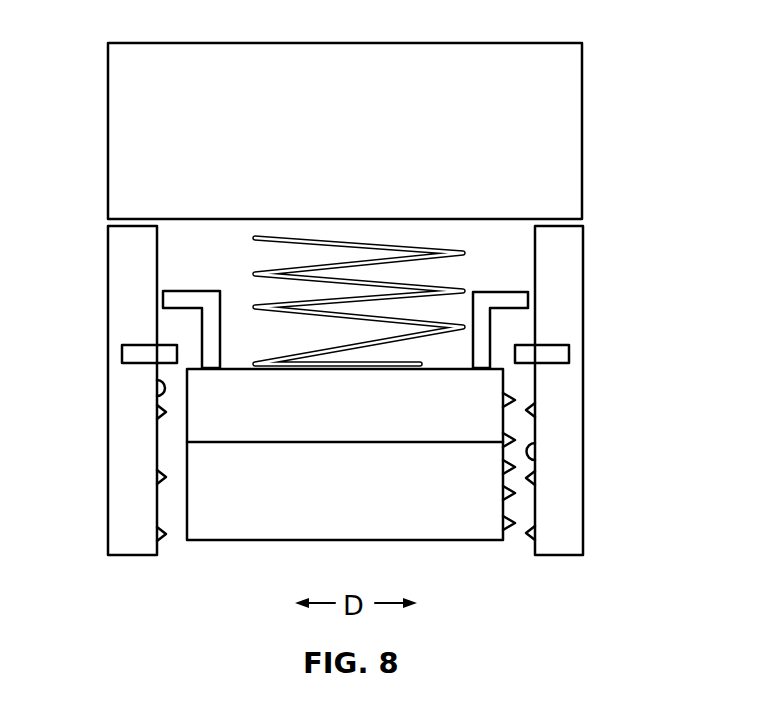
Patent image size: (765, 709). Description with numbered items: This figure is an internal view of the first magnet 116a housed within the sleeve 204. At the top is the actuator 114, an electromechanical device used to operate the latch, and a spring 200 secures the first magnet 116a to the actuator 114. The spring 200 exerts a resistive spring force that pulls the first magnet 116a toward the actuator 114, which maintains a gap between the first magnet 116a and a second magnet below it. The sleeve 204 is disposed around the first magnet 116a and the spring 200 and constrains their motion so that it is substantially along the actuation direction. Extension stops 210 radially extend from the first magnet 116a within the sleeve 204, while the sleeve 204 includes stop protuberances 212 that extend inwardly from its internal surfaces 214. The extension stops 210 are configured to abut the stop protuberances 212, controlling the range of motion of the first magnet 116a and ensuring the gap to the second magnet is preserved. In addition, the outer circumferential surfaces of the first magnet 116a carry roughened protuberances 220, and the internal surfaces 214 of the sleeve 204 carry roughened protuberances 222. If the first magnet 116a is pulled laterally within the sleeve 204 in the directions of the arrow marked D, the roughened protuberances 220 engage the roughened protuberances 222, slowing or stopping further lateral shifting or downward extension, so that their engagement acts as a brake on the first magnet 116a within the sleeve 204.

The actuator 114 is at (360, 43).
The spring 200 is at (360, 242).
The sleeve 204 is at (583, 367).
The extension stops 210 is at (185, 290).
The stop protuberances 212 is at (165, 345).
The internal surfaces 214 is at (165, 393).
The first magnet 116a is at (228, 540).
The roughened protuberances 220 is at (505, 477).
The roughened protuberances 222 is at (530, 452).